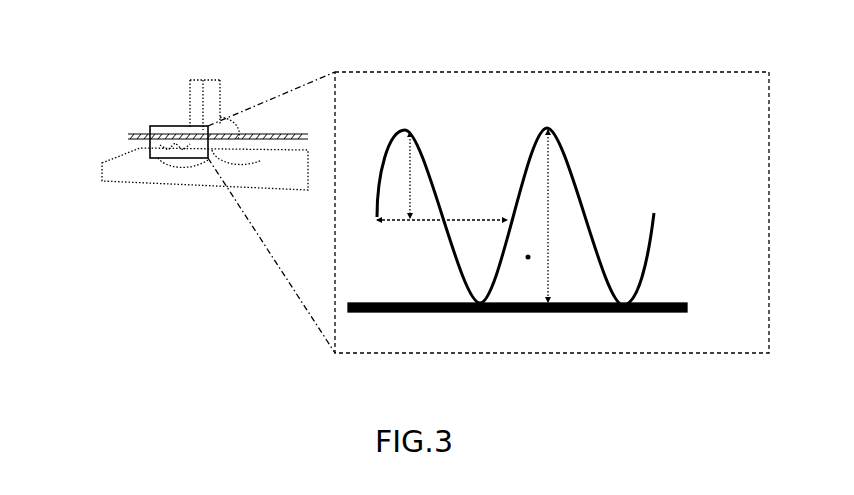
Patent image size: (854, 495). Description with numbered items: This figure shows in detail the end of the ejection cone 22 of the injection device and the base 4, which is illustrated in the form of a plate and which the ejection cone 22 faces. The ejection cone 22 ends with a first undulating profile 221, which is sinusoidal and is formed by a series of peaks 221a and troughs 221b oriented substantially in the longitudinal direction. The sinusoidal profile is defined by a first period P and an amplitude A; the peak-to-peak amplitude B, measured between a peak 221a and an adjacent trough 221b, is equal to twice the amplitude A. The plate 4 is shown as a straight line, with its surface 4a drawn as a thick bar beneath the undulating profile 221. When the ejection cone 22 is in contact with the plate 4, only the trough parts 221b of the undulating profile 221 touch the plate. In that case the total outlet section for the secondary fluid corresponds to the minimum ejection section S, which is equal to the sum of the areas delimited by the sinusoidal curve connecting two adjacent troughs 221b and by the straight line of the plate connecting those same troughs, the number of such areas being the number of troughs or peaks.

The ejection cone 22 is at (190, 118).
The base 4 is at (270, 137).
The surface of base plate 4a is at (232, 140).
The first undulating profile 221 is at (660, 225).
The peak 221a is at (548, 128).
The trough 221b is at (627, 313).
The amplitude A is at (412, 168).
The first period P is at (470, 215).
The peak-to-peak amplitude B is at (550, 170).
The minimum ejection section S is at (530, 257).